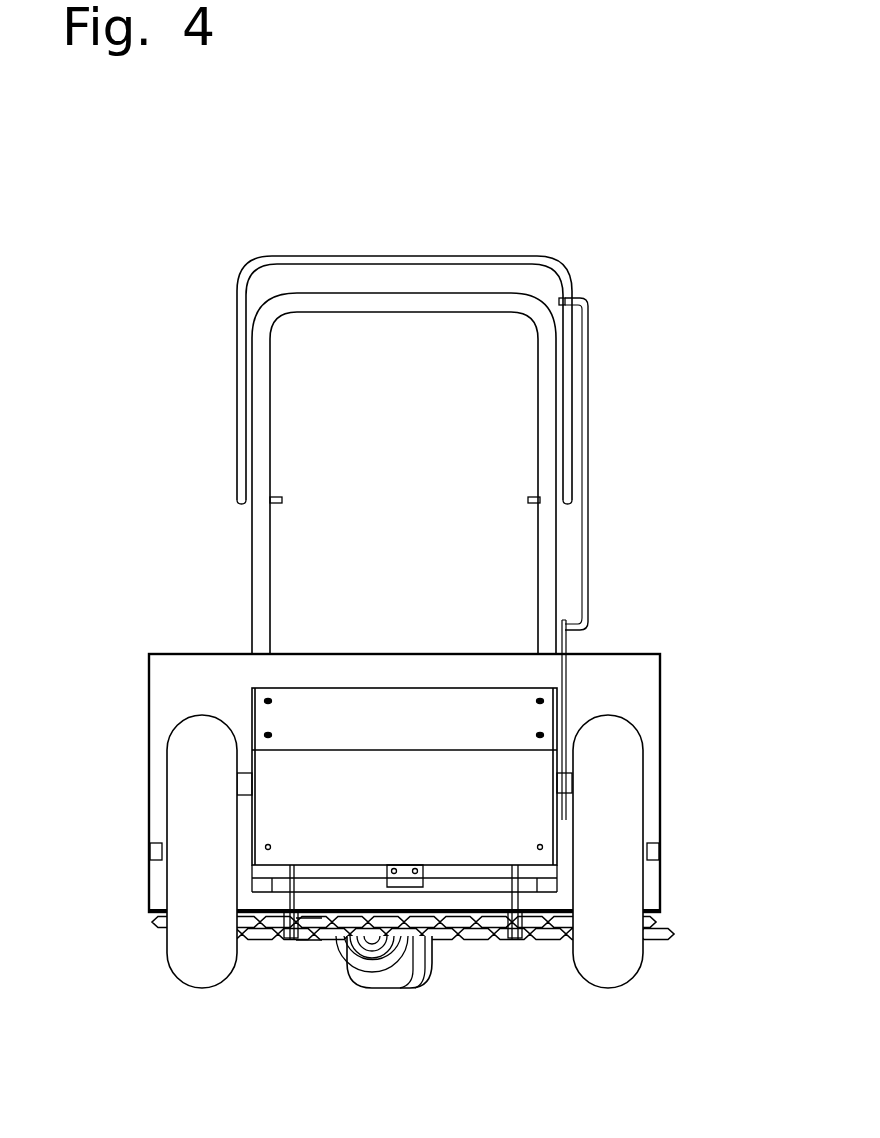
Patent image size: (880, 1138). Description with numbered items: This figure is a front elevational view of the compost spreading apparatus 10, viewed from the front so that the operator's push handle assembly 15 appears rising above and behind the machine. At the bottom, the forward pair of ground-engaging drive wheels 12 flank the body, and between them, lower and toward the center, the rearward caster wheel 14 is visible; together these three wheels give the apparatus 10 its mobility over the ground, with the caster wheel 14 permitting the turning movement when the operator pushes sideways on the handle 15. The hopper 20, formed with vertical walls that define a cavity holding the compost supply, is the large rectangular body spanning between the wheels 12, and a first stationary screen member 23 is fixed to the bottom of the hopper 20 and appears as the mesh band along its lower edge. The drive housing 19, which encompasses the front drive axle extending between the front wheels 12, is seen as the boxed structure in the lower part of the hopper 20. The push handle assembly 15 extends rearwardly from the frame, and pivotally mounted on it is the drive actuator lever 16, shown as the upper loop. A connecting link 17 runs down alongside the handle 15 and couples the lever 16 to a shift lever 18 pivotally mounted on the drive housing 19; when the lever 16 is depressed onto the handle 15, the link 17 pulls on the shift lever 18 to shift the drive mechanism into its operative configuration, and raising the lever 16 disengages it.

The compost spreading apparatus 10 is at (592, 138).
The ground-engaging drive wheels 12 is at (197, 975).
The caster wheel 14 is at (403, 985).
The push handle assembly 15 is at (258, 527).
The drive actuator lever 16 is at (398, 262).
The connecting link 17 is at (582, 545).
The shift lever 18 is at (567, 642).
The drive housing 19 is at (523, 763).
The hopper 20 is at (172, 688).
The first stationary screen member 23 is at (308, 935).